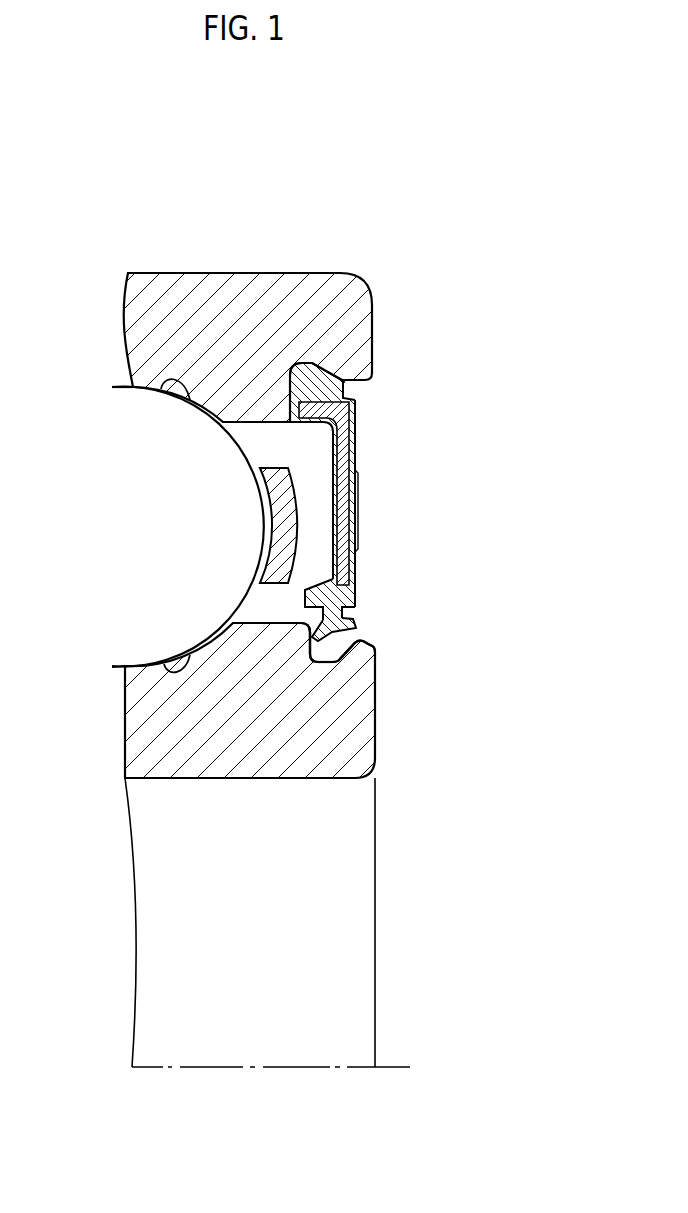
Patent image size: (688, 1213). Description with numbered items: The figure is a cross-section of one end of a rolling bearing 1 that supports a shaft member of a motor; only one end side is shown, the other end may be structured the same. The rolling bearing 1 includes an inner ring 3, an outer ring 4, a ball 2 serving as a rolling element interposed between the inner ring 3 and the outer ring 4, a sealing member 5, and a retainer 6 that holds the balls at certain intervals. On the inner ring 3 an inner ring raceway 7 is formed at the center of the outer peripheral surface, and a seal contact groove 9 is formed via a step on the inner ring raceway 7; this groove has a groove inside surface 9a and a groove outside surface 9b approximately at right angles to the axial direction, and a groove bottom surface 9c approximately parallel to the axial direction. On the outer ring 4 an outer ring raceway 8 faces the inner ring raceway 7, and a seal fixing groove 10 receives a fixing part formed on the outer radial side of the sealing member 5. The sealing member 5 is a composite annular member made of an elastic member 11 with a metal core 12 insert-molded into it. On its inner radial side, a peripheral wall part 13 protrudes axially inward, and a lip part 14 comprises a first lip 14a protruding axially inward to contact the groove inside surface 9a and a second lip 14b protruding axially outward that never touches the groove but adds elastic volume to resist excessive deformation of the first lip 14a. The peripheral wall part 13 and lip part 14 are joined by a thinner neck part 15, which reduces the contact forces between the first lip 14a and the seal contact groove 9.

The rolling bearing 1 is at (398, 213).
The ball 2 is at (160, 476).
The inner ring 3 is at (150, 718).
The outer ring 4 is at (153, 320).
The sealing member 5 is at (322, 481).
The retainer 6 is at (278, 533).
The inner ring raceway 7 is at (165, 662).
The outer ring raceway 8 is at (156, 389).
The seal contact groove 9 is at (397, 709).
The groove inside surface 9a is at (328, 662).
The groove outside surface 9b is at (309, 647).
The groove bottom surface 9c is at (350, 648).
The seal fixing groove 10 is at (322, 338).
The elastic member 11 is at (357, 462).
The metal core 12 is at (340, 442).
The peripheral wall part 13 is at (353, 562).
The lip part 14 is at (416, 618).
The first lip 14a is at (356, 617).
The second lip 14b is at (357, 629).
The neck part 15 is at (340, 610).